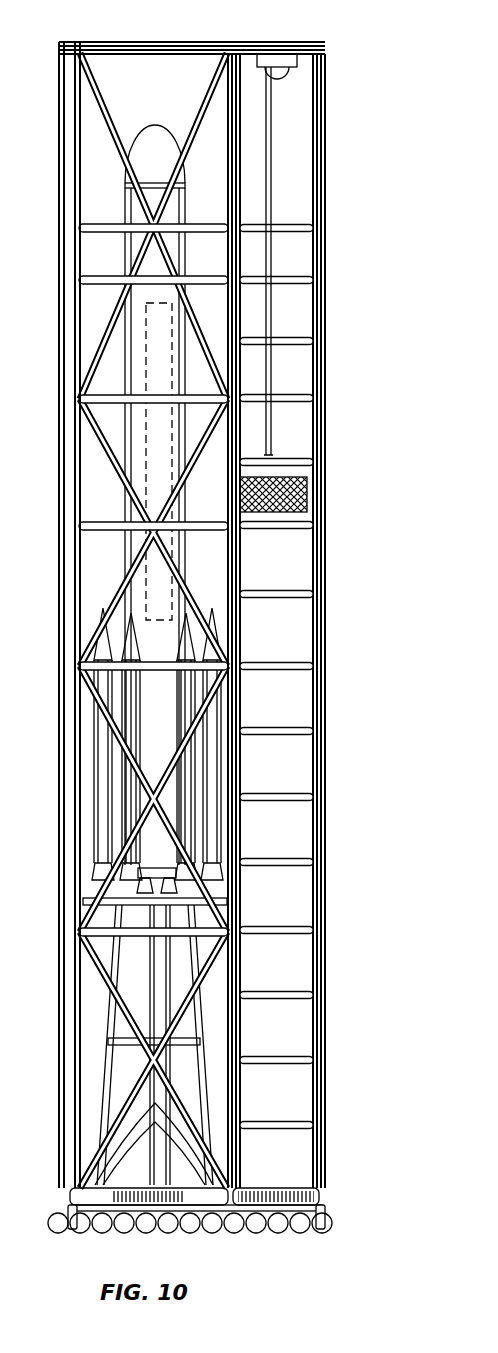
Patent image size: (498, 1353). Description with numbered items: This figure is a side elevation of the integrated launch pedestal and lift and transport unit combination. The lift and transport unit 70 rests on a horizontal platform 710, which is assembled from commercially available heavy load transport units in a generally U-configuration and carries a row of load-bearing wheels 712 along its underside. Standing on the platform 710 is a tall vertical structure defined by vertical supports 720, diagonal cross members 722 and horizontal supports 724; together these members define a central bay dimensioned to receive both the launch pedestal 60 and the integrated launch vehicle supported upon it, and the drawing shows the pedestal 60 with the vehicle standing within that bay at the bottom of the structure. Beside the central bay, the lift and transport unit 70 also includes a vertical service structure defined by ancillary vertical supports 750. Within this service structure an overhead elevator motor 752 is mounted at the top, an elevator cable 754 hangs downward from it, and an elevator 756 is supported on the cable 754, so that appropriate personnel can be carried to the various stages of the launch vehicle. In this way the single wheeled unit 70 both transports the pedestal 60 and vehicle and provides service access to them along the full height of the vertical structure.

The lift and transport unit 70 is at (340, 198).
The vertical supports 720 is at (58, 630).
The cross members 722 is at (112, 113).
The horizontal supports 724 is at (165, 42).
The ancillary vertical supports 750 is at (243, 634).
The overhead elevator motor 752 is at (283, 55).
The elevator cable 754 is at (287, 153).
The elevator 756 is at (308, 498).
The horizontal platform 710 is at (68, 1193).
The load-bearing wheels 712 is at (170, 1234).
The launch pedestal 60 is at (100, 1092).